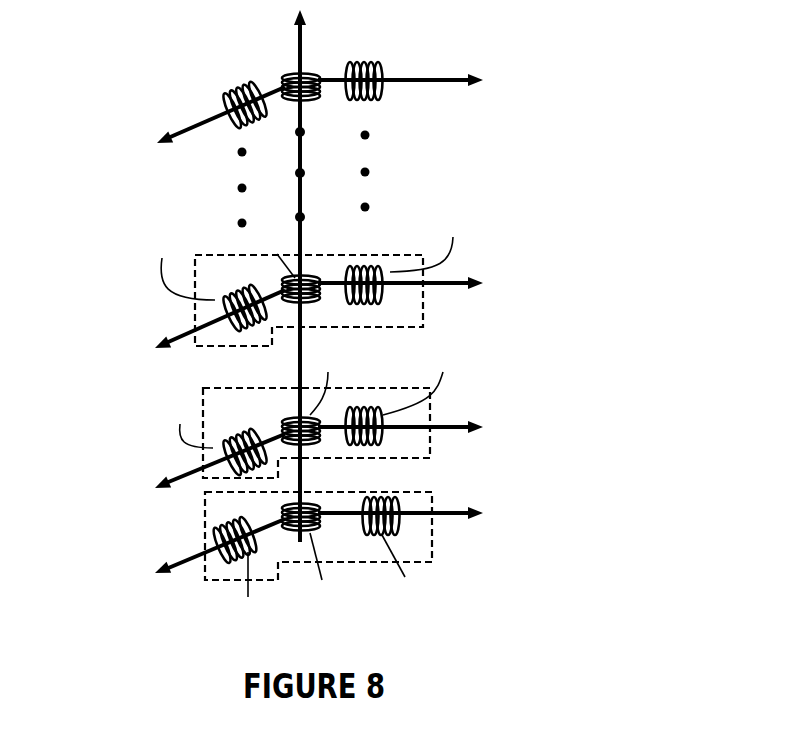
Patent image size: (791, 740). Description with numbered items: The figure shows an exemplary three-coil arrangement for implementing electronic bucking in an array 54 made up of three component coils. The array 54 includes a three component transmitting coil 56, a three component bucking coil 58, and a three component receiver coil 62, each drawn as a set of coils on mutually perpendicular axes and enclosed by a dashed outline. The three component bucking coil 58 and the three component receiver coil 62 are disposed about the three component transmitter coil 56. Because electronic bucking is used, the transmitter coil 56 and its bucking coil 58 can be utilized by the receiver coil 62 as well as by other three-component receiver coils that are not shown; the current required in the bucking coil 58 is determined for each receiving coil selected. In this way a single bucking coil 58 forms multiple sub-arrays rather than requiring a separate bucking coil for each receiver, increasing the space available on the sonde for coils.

The array 54 is at (100, 72).
The three component transmitting coil 56 is at (432, 547).
The three component bucking coil 58 is at (432, 442).
The three component receiver coil 62 is at (425, 317).